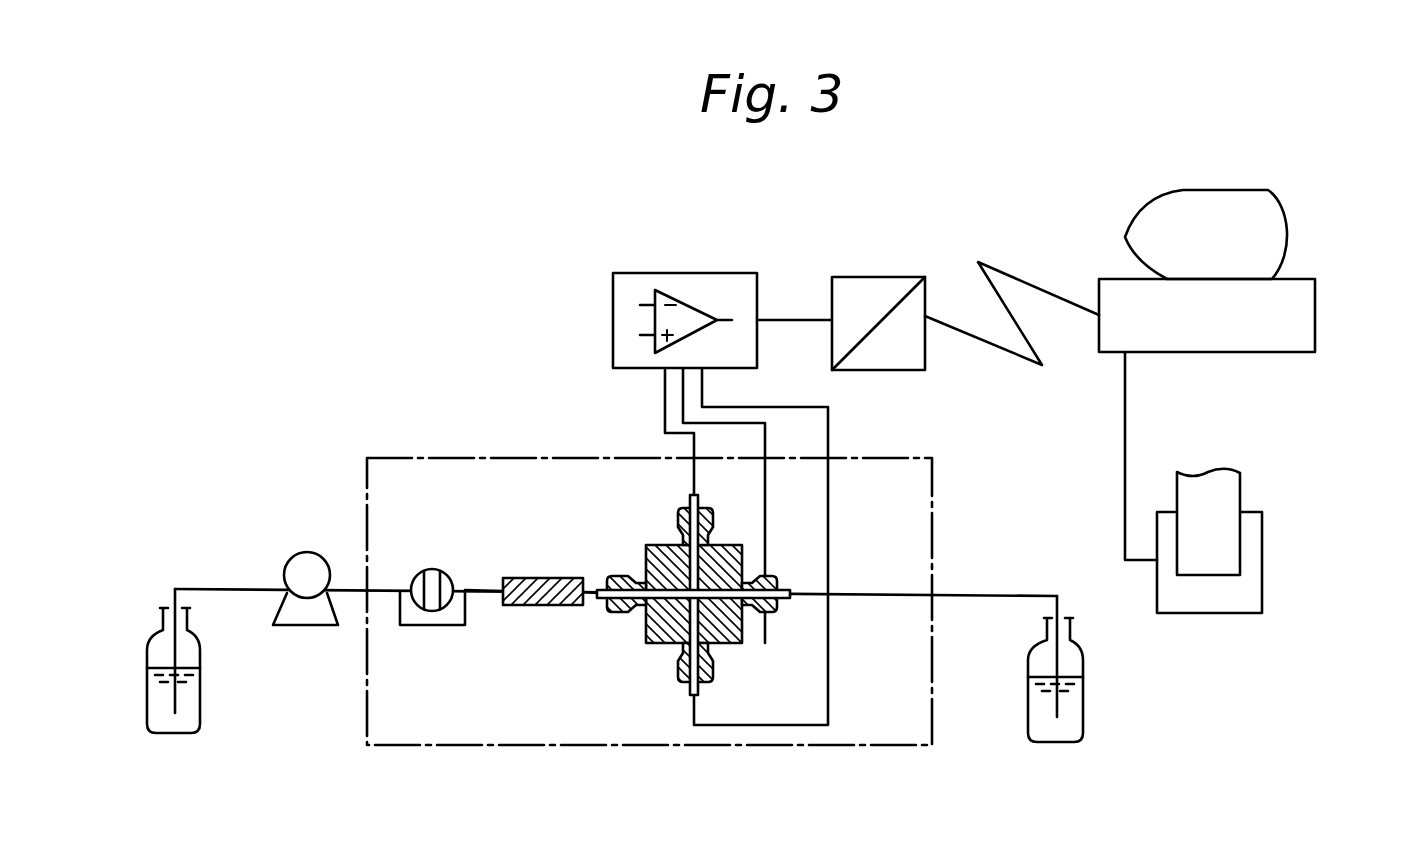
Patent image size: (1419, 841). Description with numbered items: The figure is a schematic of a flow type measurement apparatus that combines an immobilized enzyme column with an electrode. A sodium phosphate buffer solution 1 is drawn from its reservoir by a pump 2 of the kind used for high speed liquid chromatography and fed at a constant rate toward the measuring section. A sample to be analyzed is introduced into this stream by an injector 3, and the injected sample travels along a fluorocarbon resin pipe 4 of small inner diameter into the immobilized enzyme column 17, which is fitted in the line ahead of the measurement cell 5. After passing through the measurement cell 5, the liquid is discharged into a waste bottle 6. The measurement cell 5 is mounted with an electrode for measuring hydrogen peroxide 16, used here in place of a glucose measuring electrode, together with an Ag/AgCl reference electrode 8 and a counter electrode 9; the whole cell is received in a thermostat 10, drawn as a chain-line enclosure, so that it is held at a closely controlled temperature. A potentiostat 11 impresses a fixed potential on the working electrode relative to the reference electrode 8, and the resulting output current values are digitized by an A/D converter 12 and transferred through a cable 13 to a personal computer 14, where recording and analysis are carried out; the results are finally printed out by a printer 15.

The sodium phosphate buffer solution 1 is at (200, 690).
The pump 2 is at (300, 553).
The injector 3 is at (432, 568).
The pipe 4 is at (498, 595).
The measurement cell 5 is at (653, 633).
The waste bottle 6 is at (1083, 706).
The Ag/AgCl reference electrode 8 is at (675, 677).
The counter electrode 9 is at (766, 617).
The thermostat 10 is at (697, 748).
The potentiostat 11 is at (613, 310).
The A/D converter 12 is at (865, 277).
The cable 13 is at (1015, 352).
The personal computer 14 is at (1302, 312).
The printer 15 is at (1247, 592).
The electrode for measuring hydrogen peroxide 16 is at (680, 512).
The immobilized enzyme column 17 is at (515, 576).